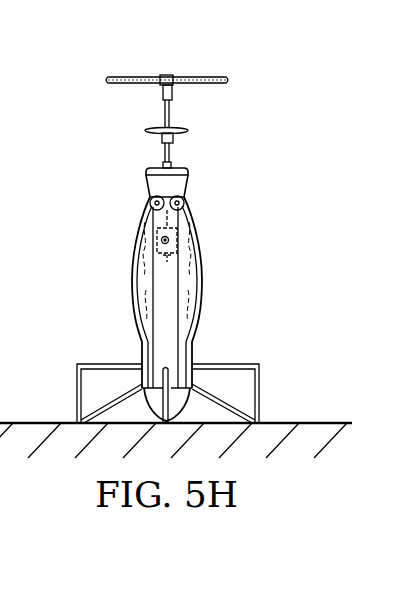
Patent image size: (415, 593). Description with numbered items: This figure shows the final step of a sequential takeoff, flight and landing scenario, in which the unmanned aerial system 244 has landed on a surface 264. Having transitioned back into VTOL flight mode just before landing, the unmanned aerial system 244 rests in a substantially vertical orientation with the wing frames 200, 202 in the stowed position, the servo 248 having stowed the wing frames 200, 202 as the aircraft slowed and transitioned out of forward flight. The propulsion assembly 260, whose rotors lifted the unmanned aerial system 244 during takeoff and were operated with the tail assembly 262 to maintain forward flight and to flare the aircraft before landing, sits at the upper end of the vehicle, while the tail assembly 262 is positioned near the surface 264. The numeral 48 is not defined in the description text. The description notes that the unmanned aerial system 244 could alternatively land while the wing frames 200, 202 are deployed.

The component (clipped at sheet edge) 48 is at (0, 124).
The wing frame 200 is at (135, 255).
The wing frame 202 is at (200, 275).
The unmanned aerial system 244 is at (232, 133).
The servo 248 is at (167, 262).
The propulsion assembly 260 is at (166, 75).
The tail assembly 262 is at (77, 392).
The surface 264 is at (316, 422).